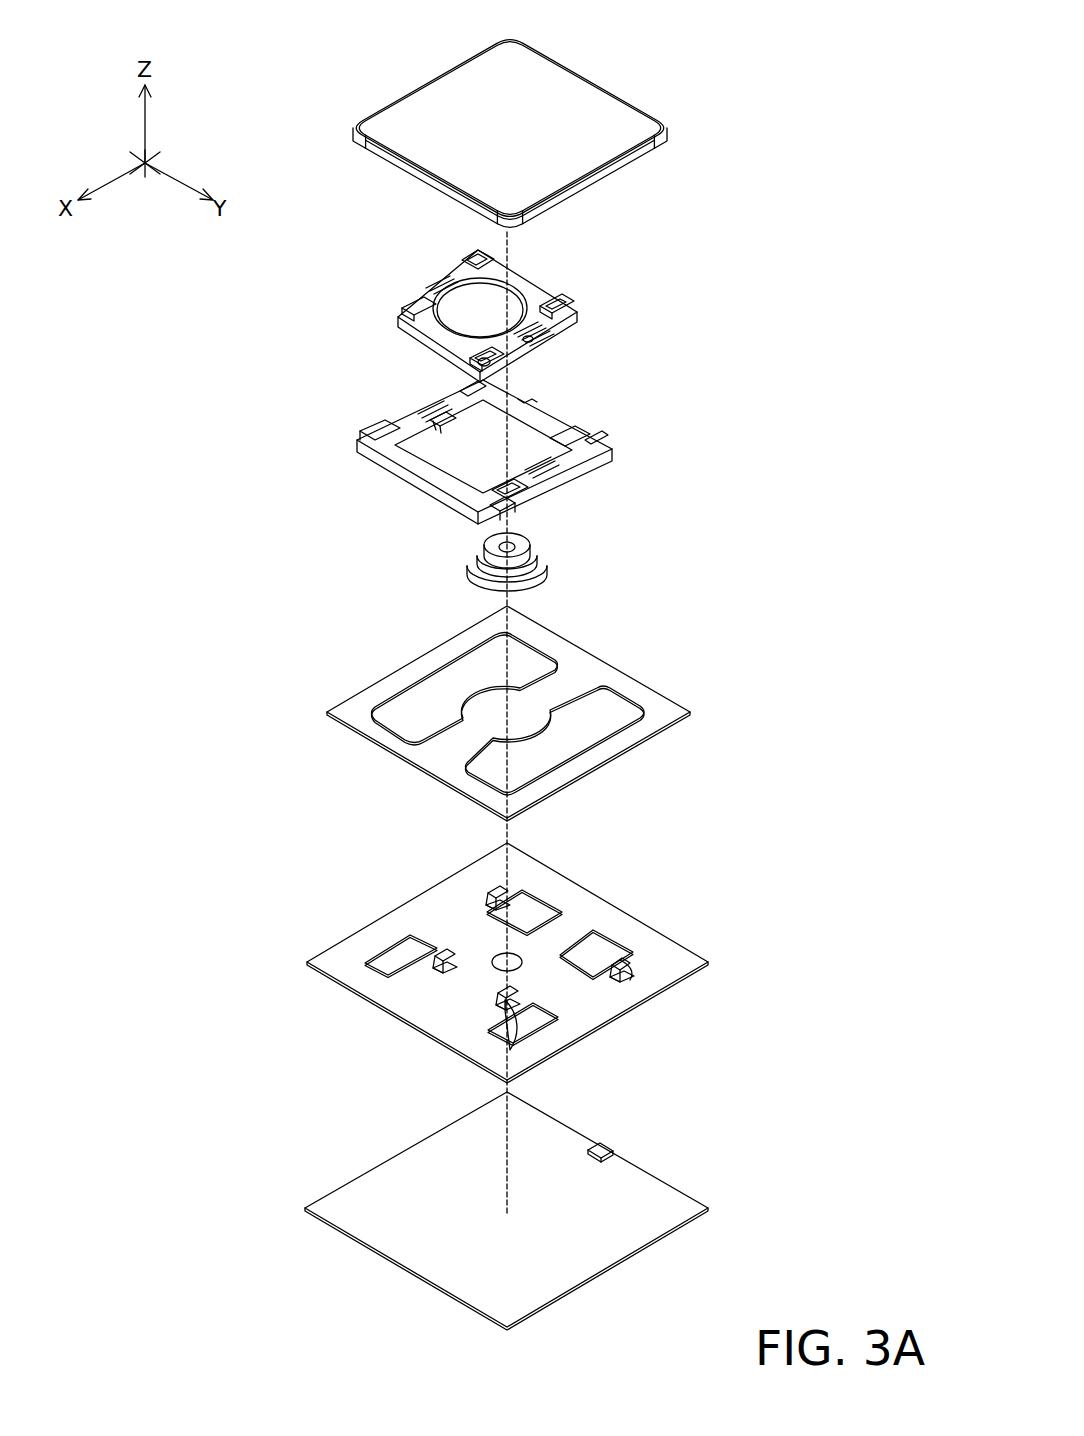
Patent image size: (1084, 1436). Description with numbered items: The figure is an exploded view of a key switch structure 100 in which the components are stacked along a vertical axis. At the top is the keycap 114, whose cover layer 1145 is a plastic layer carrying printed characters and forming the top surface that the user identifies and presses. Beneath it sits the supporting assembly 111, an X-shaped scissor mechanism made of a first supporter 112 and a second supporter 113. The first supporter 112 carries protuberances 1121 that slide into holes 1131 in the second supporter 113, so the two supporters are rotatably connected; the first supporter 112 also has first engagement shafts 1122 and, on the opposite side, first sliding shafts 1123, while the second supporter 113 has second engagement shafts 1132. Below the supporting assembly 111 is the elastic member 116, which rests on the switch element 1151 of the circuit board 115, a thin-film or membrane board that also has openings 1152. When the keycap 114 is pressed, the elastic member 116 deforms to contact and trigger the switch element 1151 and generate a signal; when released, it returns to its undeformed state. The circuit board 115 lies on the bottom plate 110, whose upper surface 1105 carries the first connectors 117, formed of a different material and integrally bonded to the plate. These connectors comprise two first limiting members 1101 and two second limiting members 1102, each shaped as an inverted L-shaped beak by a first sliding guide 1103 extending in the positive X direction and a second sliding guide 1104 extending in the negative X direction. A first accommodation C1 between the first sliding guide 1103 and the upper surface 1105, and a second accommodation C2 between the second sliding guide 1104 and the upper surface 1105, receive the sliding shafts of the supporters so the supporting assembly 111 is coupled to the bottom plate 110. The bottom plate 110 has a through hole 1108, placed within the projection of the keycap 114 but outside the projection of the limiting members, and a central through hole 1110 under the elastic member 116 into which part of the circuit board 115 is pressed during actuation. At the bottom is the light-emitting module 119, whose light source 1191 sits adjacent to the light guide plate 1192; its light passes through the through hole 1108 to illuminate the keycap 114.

The key switch structure 100 is at (285, 24).
The keycap 114 is at (690, 133).
The cover layer 1145 is at (580, 100).
The supporting assembly 111 is at (748, 282).
The first supporter 112 is at (604, 301).
The first engagement shaft 1122 is at (556, 304).
The protuberance 1121 is at (534, 340).
The first sliding shaft 1123 is at (478, 364).
The second supporter 113 is at (626, 467).
The hole 1131 is at (433, 430).
The second engagement shaft 1132 is at (512, 516).
The elastic member 116 is at (572, 565).
The circuit board 115 is at (698, 712).
The switch element 1151 is at (522, 708).
The opening 1152 is at (595, 728).
The bottom plate 110 is at (726, 963).
The first connector 117 is at (887, 894).
The first limiting member 1101 is at (443, 962).
The second limiting member 1102 is at (496, 890).
The first sliding guide 1103 is at (432, 964).
The second sliding guide 1104 is at (500, 905).
The upper surface 1105 is at (585, 1020).
The through hole 1108 is at (506, 916).
The through hole 1110 is at (495, 958).
The first accommodation C1 is at (504, 1045).
The second accommodation C2 is at (636, 966).
The light-emitting module 119 is at (734, 1198).
The light source 1191 is at (605, 1148).
The light guide plate 1192 is at (645, 1182).